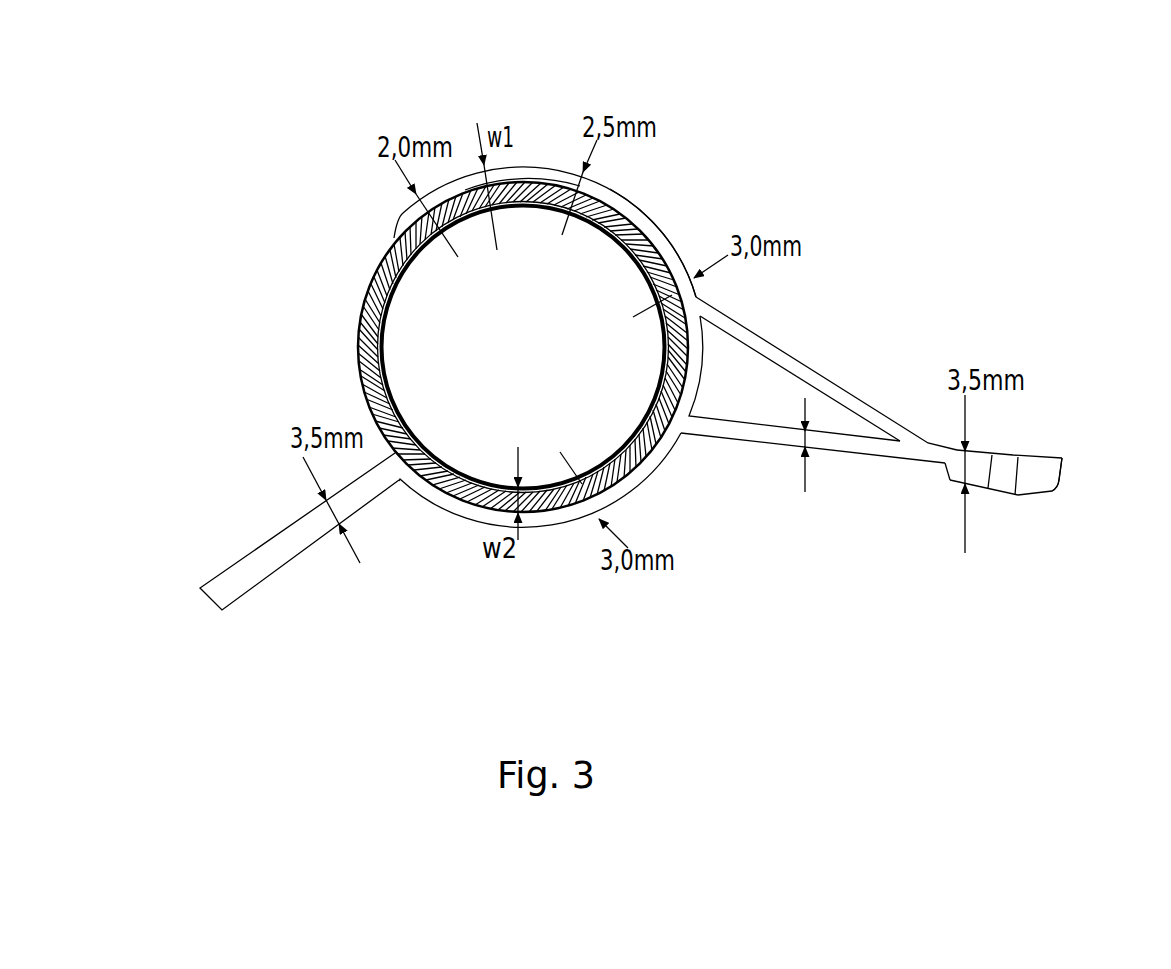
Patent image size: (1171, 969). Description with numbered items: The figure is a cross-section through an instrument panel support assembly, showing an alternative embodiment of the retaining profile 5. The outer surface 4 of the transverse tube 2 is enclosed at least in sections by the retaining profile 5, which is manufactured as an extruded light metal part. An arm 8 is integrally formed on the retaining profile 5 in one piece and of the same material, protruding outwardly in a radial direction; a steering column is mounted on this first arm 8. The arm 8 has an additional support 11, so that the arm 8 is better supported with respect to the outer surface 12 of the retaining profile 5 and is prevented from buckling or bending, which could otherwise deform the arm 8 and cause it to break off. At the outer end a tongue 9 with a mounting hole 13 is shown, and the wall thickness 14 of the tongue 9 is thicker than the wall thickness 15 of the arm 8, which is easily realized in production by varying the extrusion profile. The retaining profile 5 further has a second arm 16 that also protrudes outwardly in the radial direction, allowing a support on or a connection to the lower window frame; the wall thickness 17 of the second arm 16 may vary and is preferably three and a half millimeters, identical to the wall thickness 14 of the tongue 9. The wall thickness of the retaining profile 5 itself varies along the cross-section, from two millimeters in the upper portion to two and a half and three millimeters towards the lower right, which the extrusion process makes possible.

The transverse tube 2 is at (360, 330).
The outer surface 4 is at (372, 262).
The retaining profile 5 is at (536, 178).
The arm 8 is at (690, 440).
The tongue 9 is at (1050, 490).
The additional support 11 is at (805, 365).
The outer surface 12 is at (652, 220).
The mounting hole 13 is at (1003, 465).
The wall thickness 14 is at (965, 520).
The wall thickness 15 is at (805, 478).
The second arm 16 is at (272, 552).
The wall thickness 17 is at (339, 524).